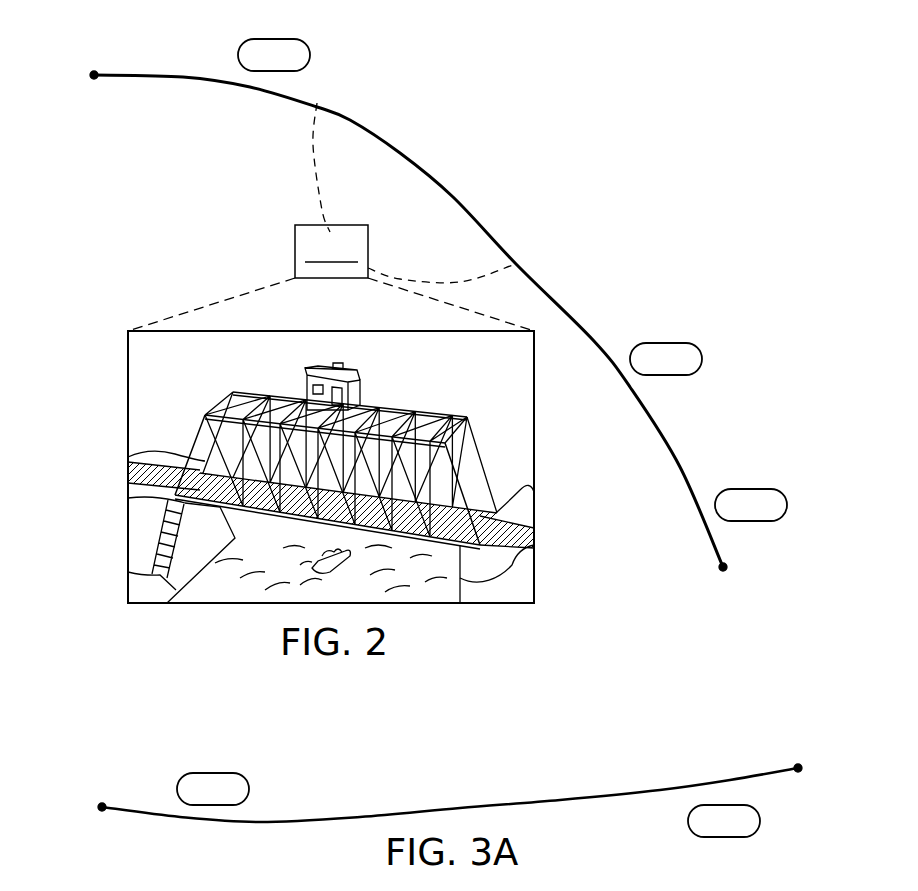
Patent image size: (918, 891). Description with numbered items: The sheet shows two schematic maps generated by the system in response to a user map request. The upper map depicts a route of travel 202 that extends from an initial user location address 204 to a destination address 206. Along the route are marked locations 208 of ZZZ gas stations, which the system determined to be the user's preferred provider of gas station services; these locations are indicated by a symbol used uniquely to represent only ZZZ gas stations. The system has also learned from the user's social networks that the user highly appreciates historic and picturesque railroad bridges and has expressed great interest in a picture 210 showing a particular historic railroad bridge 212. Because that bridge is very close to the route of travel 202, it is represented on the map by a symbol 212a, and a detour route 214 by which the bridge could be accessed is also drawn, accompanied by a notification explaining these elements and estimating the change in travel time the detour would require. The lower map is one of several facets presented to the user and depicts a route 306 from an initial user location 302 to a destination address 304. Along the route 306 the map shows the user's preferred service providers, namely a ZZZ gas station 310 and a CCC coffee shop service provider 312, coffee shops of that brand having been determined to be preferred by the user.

In FIG. 2, the route of travel 202 is at (452, 195).
In FIG. 2, the initial user location address 204 is at (93, 70).
In FIG. 2, the destination address 206 is at (728, 568).
In FIG. 2, the locations of ZZZ gas stations 208 is at (238, 54).
In FIG. 2, the picture 210 is at (132, 492).
In FIG. 2, the historic railroad bridge 212 is at (438, 410).
In FIG. 2, the symbol 212a is at (331, 278).
In FIG. 2, the detour route 214 is at (312, 150).
In FIG. 3A, the initial user location 302 is at (101, 803).
In FIG. 3A, the destination address 304 is at (799, 764).
In FIG. 3A, the route 306 is at (450, 811).
In FIG. 3A, the ZZZ gas station 310 is at (213, 772).
In FIG. 3A, the service provider 312 is at (760, 821).